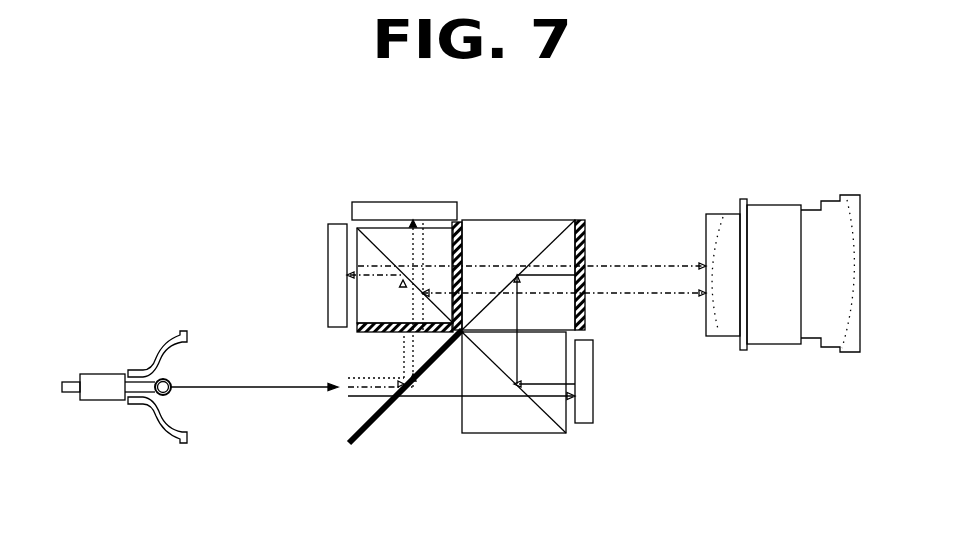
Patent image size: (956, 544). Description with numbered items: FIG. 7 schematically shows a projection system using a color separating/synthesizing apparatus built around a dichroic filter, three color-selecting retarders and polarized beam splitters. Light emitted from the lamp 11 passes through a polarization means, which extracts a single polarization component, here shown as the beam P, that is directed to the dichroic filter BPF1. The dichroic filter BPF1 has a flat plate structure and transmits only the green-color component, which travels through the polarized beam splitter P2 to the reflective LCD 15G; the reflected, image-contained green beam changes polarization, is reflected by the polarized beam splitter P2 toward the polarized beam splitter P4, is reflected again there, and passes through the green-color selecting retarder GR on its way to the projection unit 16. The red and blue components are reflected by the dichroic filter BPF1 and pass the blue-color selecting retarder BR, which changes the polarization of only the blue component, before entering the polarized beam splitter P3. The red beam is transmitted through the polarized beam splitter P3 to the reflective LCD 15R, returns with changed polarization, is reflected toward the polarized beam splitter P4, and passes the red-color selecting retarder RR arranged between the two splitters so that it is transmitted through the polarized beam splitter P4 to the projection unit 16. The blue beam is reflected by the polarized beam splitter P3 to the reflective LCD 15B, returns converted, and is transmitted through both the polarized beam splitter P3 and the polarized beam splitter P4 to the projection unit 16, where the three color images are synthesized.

The lamp 11 is at (136, 364).
The reflective LCD 15R is at (385, 201).
The reflective LCD 15G is at (593, 390).
The reflective LCD 15B is at (328, 275).
The red-color selecting retarder RR is at (452, 240).
The blue-color selecting retarder BR is at (375, 325).
The green-color selecting retarder GR is at (590, 228).
The projection unit 16 is at (787, 205).
The P waves P is at (254, 374).
The polarized beam splitter P2 is at (514, 382).
The polarized beam splitter P3 is at (405, 275).
The polarized beam splitter P4 is at (518, 275).
The dichroic filter BPF1 is at (372, 427).